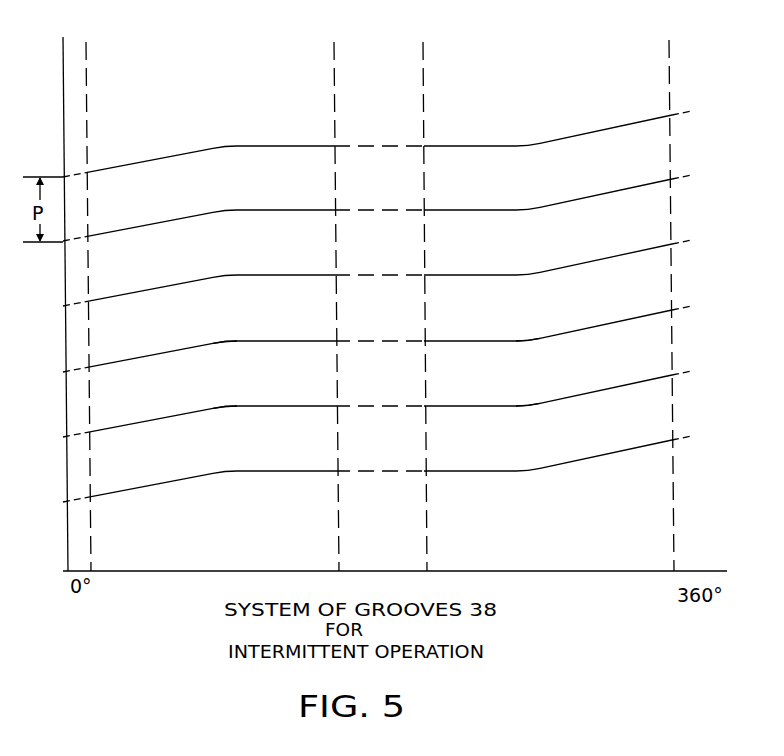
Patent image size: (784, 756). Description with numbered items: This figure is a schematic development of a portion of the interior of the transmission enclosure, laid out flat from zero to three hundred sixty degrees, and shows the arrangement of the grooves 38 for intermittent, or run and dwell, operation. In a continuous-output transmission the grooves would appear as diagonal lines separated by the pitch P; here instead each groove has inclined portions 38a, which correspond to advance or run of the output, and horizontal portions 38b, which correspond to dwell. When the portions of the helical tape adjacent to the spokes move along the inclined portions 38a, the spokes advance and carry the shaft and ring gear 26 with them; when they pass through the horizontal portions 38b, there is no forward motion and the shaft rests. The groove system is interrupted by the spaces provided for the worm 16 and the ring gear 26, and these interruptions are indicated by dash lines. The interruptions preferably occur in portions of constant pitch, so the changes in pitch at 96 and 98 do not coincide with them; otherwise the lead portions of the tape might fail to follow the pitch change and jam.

The worm 16 is at (423, 72).
The ring gear 26 is at (678, 142).
The grooves 38 is at (305, 411).
The inclined portions 38a is at (166, 483).
The horizontal portions 38b is at (484, 472).
The change in pitch 96 is at (224, 340).
The change in pitch 98 is at (535, 338).